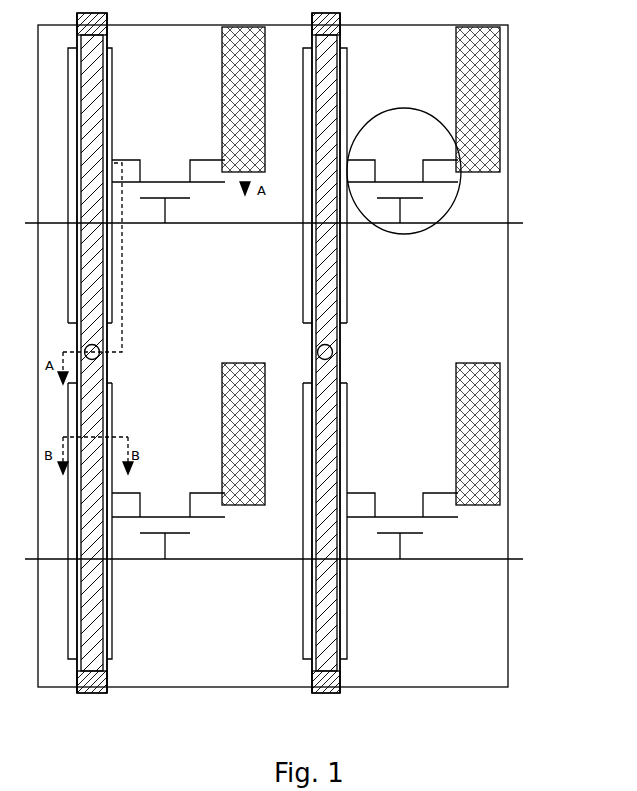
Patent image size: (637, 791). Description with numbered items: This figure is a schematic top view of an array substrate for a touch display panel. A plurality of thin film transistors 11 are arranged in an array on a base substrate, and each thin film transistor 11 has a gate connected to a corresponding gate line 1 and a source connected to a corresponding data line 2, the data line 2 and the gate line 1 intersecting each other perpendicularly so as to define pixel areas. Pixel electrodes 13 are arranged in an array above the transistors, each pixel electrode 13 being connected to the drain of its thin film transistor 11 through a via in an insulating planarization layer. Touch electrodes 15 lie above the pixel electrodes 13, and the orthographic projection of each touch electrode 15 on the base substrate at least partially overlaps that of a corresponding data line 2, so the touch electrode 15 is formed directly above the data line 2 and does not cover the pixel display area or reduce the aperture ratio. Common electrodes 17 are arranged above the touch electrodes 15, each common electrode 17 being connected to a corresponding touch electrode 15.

The gate line 1 is at (515, 557).
The data line 2 is at (337, 677).
The thin film transistor 11 is at (457, 197).
The pixel electrode 13 is at (482, 425).
The touch electrode 15 is at (340, 683).
The common electrode 17 is at (463, 308).